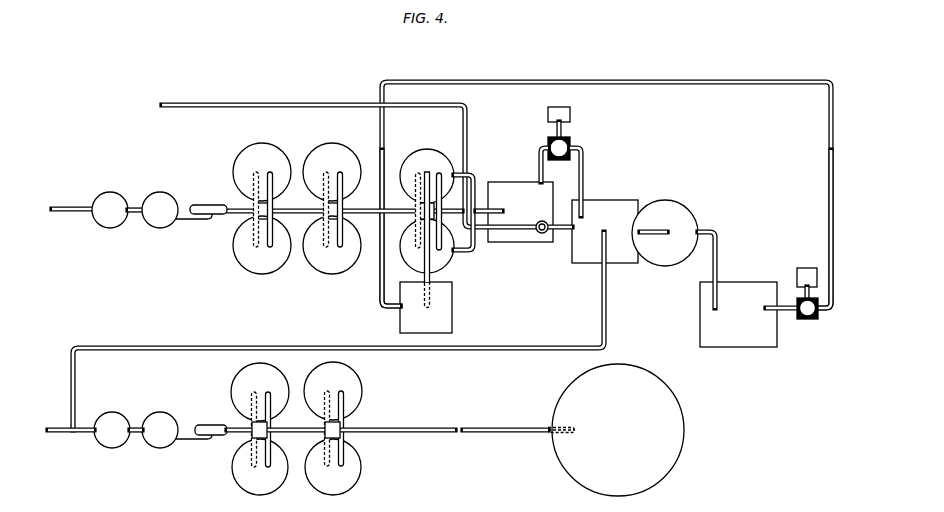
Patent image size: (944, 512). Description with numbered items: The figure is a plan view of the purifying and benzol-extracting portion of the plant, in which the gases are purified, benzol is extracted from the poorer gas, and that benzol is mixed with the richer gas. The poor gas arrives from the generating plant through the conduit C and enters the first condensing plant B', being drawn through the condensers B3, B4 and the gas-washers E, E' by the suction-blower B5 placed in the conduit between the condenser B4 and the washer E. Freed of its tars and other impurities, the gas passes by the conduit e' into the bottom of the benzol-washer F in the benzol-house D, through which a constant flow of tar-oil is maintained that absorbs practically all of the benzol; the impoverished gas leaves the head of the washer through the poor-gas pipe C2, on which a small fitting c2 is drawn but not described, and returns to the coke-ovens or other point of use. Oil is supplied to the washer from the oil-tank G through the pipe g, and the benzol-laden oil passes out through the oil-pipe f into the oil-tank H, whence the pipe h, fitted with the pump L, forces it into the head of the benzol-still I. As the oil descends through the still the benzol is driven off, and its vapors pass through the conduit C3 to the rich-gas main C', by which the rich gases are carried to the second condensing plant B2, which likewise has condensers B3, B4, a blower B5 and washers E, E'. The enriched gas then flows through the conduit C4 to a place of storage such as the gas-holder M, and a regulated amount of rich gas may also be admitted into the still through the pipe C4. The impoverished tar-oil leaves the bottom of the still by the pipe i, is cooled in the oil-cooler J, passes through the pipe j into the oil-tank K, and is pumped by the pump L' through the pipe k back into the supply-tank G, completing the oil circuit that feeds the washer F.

The conduit C is at (72, 224).
The rich-gas main C' is at (69, 418).
The poor-gas conduit C2 is at (205, 98).
The benzol-vapor conduit C3 is at (604, 300).
The enriched-gas conduit C4 is at (472, 433).
The condensing plant B' is at (135, 187).
The condensing plant B2 is at (292, 418).
The condenser B3 is at (104, 194).
The condenser B4 is at (170, 193).
The suction-blower B5 is at (208, 312).
The gas-washer E is at (252, 316).
The gas-washer E' is at (327, 314).
The benzol-washer F is at (404, 207).
The conduit e' is at (344, 220).
The oil-pipe f is at (487, 209).
The pipe g is at (432, 277).
The oil-tank G is at (426, 307).
The oil-tank H is at (520, 212).
The pipe h is at (539, 160).
The benzol-still I is at (605, 231).
The pipe i is at (653, 242).
The oil-cooler J is at (665, 233).
The pipe j is at (716, 255).
The oil-tank K is at (738, 314).
The pipe k is at (676, 86).
The pump L is at (566, 133).
The pump L' is at (792, 281).
The valve c2 is at (539, 236).
The benzol-house D is at (606, 185).
The gas-holder M is at (616, 430).